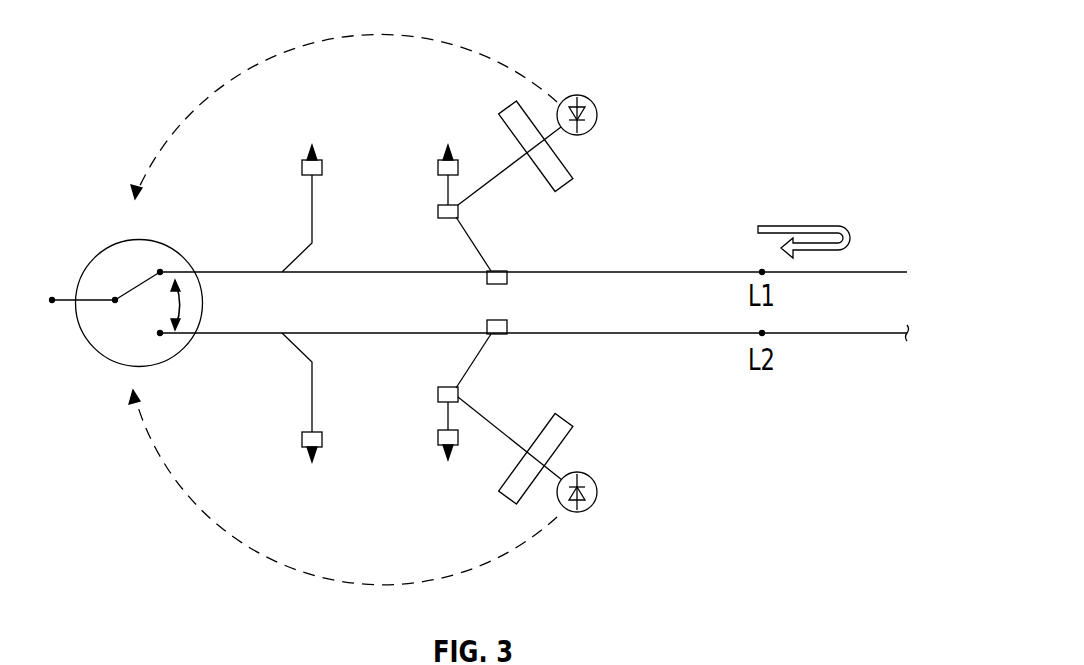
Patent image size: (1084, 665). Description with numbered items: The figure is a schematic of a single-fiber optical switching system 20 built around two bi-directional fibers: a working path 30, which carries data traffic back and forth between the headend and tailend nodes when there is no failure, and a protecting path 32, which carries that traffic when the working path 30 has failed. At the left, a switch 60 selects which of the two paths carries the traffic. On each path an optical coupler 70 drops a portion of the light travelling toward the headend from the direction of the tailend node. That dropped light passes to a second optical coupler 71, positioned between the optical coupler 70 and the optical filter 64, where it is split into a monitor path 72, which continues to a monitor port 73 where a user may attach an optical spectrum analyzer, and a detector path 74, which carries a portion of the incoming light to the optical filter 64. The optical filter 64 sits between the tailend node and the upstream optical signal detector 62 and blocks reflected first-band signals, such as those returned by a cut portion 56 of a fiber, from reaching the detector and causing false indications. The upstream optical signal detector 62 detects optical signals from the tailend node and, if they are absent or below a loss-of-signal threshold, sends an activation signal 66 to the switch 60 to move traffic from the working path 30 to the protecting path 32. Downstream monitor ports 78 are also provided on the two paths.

The optical switching system 20 is at (690, 47).
The working path 30 is at (683, 272).
The protecting path 32 is at (662, 333).
The cut portion 56 is at (907, 272).
The switch 60 is at (135, 241).
The upstream optical signal detector 62 is at (598, 113).
The optical filter 64 is at (572, 168).
The activation signal 66 is at (365, 35).
The optical coupler 70 is at (498, 270).
The second optical coupler 71 is at (440, 221).
The monitor path 72 is at (448, 192).
The monitor port 73 is at (445, 157).
The detector path 74 is at (480, 188).
The downstream monitor port 78 is at (305, 158).